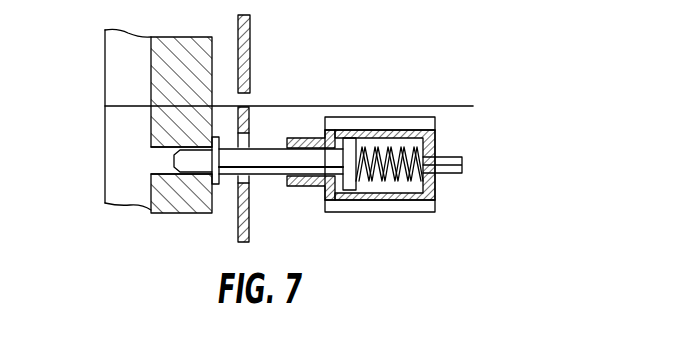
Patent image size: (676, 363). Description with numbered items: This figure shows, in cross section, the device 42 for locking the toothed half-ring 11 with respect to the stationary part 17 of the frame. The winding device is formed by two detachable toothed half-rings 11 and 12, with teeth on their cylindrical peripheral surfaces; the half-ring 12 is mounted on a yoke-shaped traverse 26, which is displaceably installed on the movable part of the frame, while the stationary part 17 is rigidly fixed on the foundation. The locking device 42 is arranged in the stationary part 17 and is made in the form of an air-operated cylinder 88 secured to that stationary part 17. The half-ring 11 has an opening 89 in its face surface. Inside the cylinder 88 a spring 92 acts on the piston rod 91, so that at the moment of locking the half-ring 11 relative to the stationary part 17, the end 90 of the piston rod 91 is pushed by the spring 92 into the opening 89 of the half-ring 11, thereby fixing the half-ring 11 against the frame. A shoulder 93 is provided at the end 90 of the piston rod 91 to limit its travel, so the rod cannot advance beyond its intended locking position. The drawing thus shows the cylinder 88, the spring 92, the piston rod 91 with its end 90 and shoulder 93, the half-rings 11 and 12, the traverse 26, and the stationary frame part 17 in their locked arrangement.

The toothed half-ring 11 is at (160, 203).
The toothed half-ring 12 is at (152, 68).
The stationary part of the frame 17 is at (249, 228).
The yoke-shaped traverse 26 is at (249, 29).
The device for locking the toothed half-ring 42 is at (355, 37).
The air-operated cylinder 88 is at (362, 213).
The opening 89 is at (155, 165).
The end of the piston rod 90 is at (191, 190).
The piston rod 91 is at (263, 152).
The spring 92 is at (372, 150).
The shoulder 93 is at (217, 184).